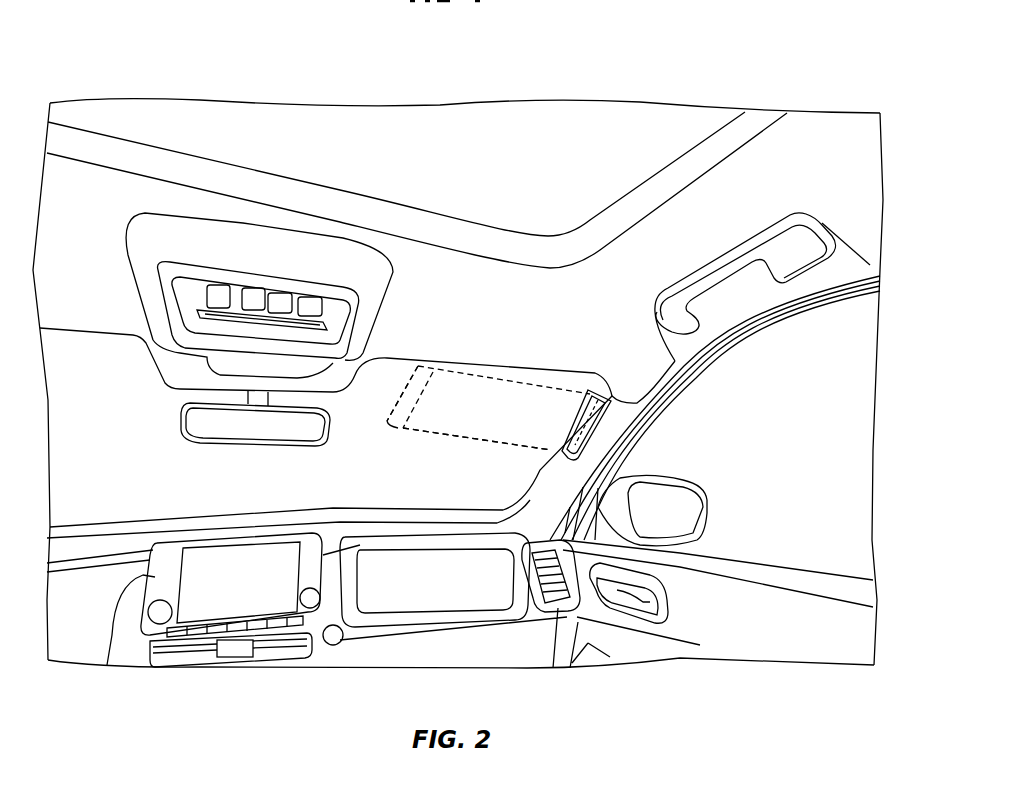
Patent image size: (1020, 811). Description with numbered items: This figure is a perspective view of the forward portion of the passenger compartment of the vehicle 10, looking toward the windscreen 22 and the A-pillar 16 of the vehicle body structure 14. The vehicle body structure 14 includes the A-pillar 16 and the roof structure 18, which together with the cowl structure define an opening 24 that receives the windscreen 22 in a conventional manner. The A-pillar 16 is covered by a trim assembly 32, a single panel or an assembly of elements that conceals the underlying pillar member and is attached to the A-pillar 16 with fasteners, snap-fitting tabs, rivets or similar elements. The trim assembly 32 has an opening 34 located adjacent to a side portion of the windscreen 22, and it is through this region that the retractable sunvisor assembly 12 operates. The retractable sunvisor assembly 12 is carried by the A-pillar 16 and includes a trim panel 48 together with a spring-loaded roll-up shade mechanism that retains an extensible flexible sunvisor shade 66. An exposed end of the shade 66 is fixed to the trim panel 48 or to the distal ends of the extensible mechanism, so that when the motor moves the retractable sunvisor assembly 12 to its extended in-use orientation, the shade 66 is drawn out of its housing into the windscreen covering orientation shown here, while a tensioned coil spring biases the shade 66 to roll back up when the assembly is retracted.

The vehicle 10 is at (718, 36).
The retractable sunvisor assembly 12 is at (522, 383).
The vehicle body structure 14 is at (830, 110).
The A-pillar 16 is at (643, 421).
The roof structure 18 is at (578, 116).
The windscreen 22 is at (84, 348).
The opening 24 is at (523, 489).
The trim assembly 32 is at (607, 433).
The opening 34 is at (580, 437).
The trim panel 48 is at (390, 427).
The extensible flexible sunvisor shade 66 is at (440, 427).